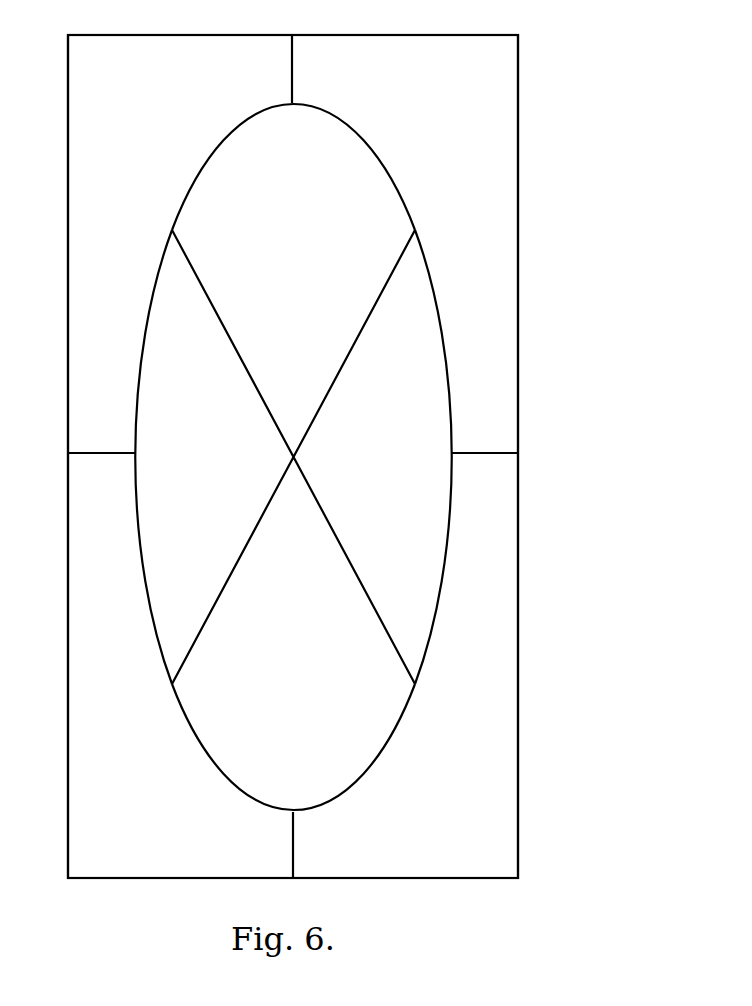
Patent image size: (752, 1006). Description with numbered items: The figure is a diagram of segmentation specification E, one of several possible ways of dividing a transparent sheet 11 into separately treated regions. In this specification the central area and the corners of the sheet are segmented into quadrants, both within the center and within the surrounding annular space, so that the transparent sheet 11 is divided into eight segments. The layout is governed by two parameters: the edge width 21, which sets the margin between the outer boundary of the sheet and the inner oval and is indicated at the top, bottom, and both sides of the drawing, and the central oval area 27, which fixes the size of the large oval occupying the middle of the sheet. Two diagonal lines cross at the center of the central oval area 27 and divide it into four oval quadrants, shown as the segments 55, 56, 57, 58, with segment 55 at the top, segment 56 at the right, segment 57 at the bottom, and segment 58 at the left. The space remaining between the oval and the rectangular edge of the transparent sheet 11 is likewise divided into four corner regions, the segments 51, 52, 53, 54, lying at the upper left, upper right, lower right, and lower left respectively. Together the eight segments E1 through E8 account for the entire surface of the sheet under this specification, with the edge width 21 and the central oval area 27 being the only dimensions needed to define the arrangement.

The transparent sheet 11 is at (531, 268).
The edge width 21 is at (310, 46).
The central oval area 27 is at (293, 457).
The segment E1 51 is at (180, 244).
The segment E2 52 is at (405, 244).
The segment E3 53 is at (405, 665).
The segment E4 54 is at (180, 665).
The segment E5 55 is at (293, 177).
The segment E6 56 is at (405, 457).
The segment E7 57 is at (293, 723).
The segment E8 58 is at (172, 457).